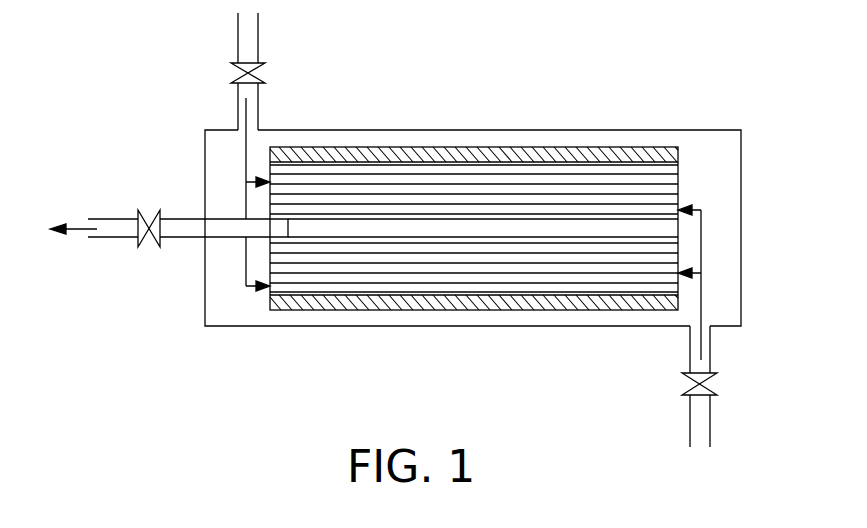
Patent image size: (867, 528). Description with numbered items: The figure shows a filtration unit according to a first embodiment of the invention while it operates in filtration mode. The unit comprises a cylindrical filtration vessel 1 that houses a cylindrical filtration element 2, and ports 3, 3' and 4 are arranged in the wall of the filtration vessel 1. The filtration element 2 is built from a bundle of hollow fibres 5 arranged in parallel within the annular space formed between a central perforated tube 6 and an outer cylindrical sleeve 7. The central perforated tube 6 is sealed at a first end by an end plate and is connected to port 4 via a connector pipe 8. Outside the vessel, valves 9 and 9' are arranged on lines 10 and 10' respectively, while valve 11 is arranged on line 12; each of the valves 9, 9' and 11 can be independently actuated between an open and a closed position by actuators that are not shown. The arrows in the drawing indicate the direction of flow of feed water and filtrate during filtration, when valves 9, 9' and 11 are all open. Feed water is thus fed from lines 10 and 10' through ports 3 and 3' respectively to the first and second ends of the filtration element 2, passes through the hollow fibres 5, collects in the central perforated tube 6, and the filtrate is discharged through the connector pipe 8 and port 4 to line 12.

The filtration vessel 1 is at (627, 130).
The filtration element 2 is at (680, 190).
The port 3 is at (234, 183).
The port 3' is at (715, 289).
The port 4 is at (204, 219).
The hollow fibres 5 is at (345, 270).
The central perforated tube 6 is at (433, 227).
The outer cylindrical sleeve 7 is at (558, 310).
The connector pipe 8 is at (222, 236).
The valve 9 is at (271, 78).
The valve 9' is at (678, 384).
The line 10 is at (282, 38).
The line 10' is at (736, 421).
The valve 11 is at (152, 247).
The line 12 is at (97, 239).